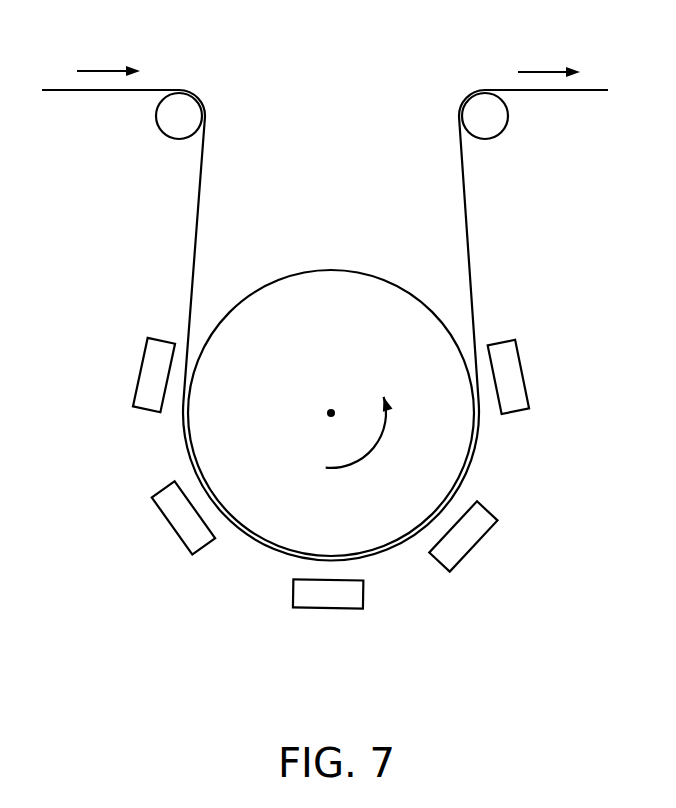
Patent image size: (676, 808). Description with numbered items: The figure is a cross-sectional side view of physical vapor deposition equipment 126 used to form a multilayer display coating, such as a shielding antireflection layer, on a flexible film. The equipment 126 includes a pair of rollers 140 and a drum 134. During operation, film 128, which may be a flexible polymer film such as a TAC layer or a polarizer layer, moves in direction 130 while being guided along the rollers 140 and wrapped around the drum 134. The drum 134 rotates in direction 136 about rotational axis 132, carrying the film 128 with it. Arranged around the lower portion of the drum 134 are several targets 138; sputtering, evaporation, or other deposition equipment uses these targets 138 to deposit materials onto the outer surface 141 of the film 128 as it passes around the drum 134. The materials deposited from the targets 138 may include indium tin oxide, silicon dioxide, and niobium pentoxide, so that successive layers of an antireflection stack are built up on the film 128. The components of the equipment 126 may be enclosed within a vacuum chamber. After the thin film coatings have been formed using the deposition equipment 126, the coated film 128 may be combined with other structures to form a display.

The equipment 126 is at (550, 593).
The film 128 is at (153, 90).
The direction 130 is at (101, 71).
The rotational axis 132 is at (331, 413).
The drum 134 is at (331, 269).
The direction 136 is at (377, 447).
The targets 138 is at (145, 372).
The rollers 140 is at (165, 124).
The outer surface 141 is at (240, 548).